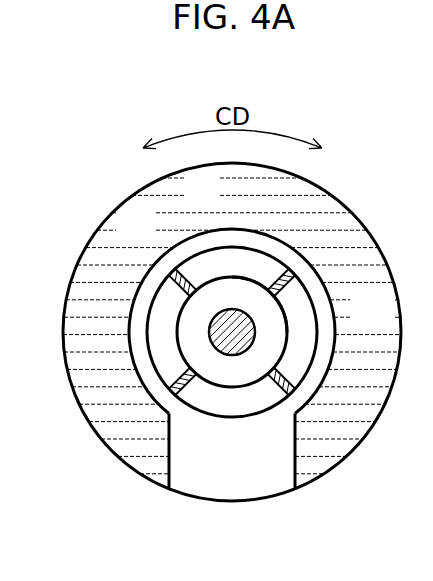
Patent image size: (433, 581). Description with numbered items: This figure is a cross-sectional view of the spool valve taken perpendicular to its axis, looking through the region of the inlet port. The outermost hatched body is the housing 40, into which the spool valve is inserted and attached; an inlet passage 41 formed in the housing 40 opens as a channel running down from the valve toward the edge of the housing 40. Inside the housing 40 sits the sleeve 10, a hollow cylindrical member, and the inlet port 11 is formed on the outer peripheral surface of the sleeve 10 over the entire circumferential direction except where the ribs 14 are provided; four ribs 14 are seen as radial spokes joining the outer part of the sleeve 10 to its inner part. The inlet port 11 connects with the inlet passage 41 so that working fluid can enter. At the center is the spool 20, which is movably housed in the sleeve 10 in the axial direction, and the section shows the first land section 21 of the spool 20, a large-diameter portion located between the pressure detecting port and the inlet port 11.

The sleeve 10 is at (143, 313).
The inlet port 11 is at (232, 270).
The ribs 14 is at (168, 270).
The spool 20 is at (228, 387).
The first land section 21 is at (272, 333).
The housing 40 is at (108, 223).
The inlet passage 41 is at (233, 493).